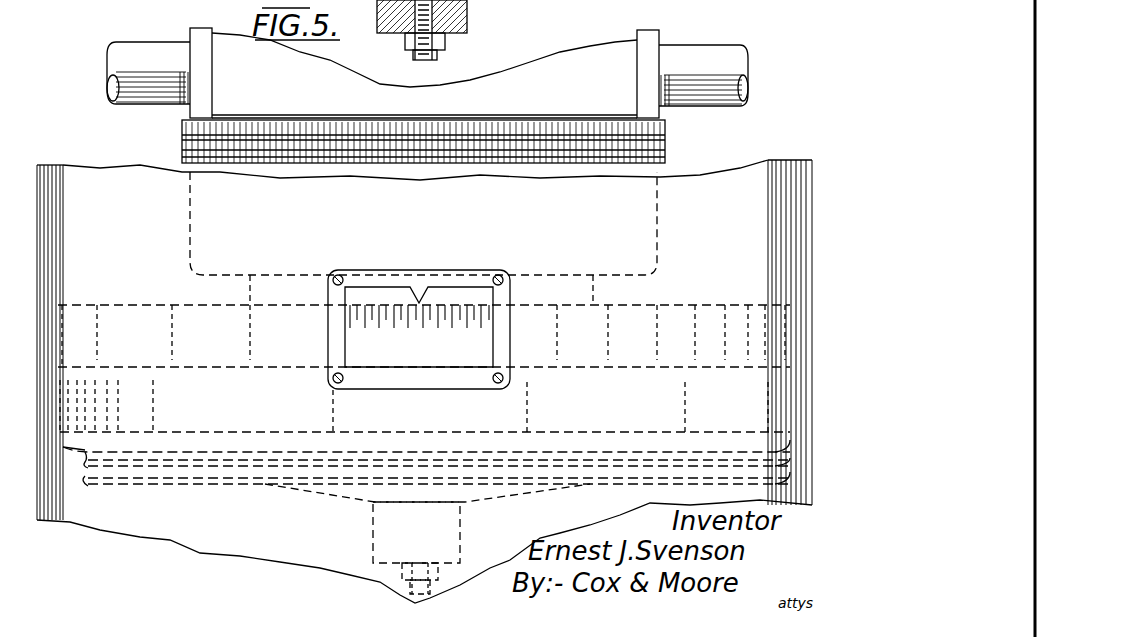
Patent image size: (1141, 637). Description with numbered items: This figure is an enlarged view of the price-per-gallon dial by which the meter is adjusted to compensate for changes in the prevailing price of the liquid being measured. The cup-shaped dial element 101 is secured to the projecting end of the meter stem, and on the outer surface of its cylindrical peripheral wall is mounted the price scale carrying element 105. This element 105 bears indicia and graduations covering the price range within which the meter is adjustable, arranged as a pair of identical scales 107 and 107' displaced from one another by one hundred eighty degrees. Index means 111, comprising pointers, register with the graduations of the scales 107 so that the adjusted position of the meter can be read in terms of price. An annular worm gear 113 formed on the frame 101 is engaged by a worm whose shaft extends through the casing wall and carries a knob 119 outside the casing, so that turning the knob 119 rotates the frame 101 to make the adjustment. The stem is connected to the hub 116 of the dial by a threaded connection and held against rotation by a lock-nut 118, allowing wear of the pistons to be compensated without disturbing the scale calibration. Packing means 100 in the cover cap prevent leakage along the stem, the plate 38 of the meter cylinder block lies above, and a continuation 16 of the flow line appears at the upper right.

The knob 119 is at (119, 50).
The continuation of the flow line 16 is at (733, 50).
The plate 38 is at (665, 150).
The packing means 100 is at (478, 14).
The hub 116 is at (467, 25).
The lock-nut 118 is at (440, 38).
The price scale carrying element 105 is at (794, 335).
The scale 107 is at (423, 342).
The scale 107' is at (425, 475).
The index means 111 is at (419, 290).
The annular worm gear 113 is at (604, 475).
The dial element 101 is at (345, 497).